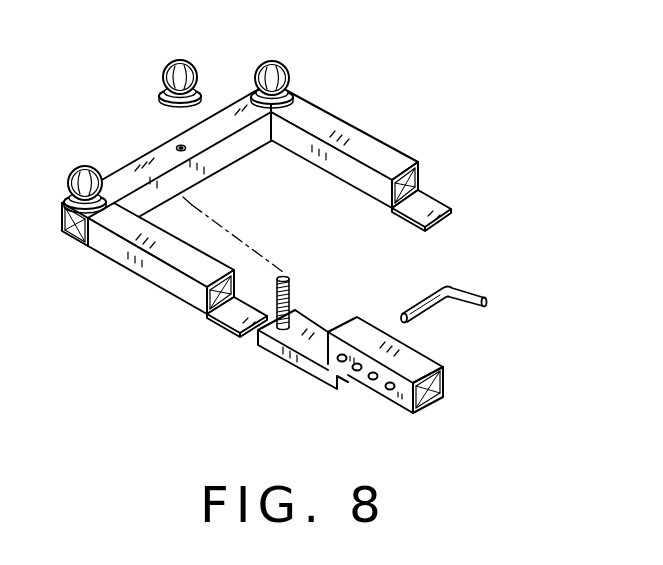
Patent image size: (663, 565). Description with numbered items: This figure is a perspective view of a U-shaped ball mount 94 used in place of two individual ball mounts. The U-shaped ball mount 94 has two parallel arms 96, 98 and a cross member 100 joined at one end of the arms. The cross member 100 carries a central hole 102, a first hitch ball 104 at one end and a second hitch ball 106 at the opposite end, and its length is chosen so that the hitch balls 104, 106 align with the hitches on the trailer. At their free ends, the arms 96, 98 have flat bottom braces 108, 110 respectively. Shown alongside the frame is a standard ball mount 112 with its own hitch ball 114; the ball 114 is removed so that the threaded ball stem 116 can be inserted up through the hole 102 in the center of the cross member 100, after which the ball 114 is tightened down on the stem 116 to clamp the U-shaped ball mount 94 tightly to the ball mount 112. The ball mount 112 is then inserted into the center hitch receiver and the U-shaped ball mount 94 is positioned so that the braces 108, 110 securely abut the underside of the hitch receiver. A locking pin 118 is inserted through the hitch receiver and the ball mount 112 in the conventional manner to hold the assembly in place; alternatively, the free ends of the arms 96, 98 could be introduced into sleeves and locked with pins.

The U-shaped ball mount 94 is at (301, 210).
The arm 96 is at (406, 156).
The arm 98 is at (177, 300).
The cross member 100 is at (147, 157).
The central hole 102 is at (211, 128).
The first hitch ball 104 is at (289, 65).
The second hitch ball 106 is at (68, 199).
The flat bottom brace 108 is at (438, 198).
The flat bottom brace 110 is at (240, 322).
The standard ball mount 112 is at (470, 348).
The hitch ball 114 is at (173, 62).
The threaded ball stem 116 is at (291, 284).
The locking pin 118 is at (470, 293).